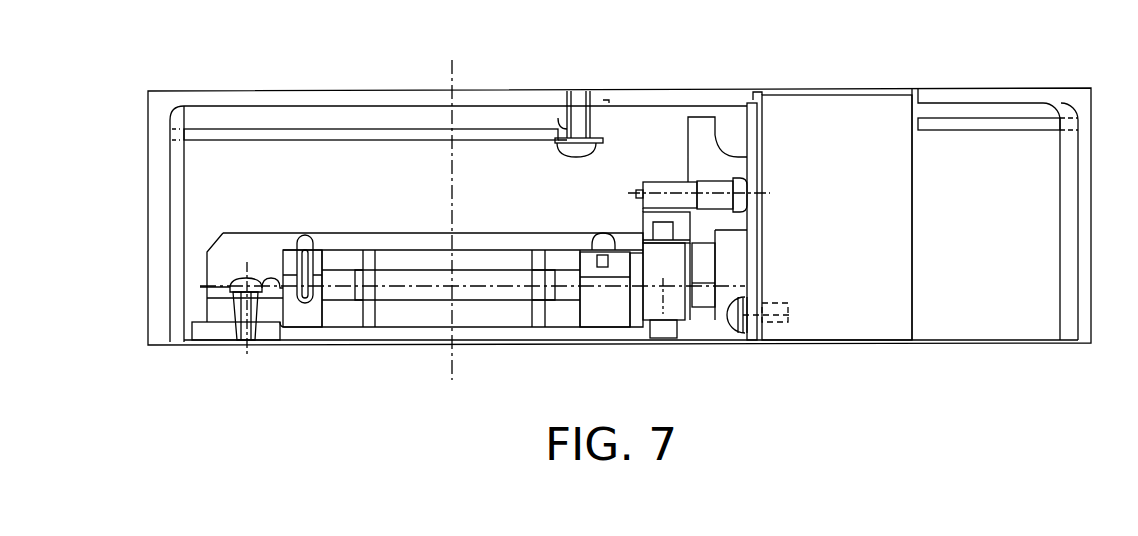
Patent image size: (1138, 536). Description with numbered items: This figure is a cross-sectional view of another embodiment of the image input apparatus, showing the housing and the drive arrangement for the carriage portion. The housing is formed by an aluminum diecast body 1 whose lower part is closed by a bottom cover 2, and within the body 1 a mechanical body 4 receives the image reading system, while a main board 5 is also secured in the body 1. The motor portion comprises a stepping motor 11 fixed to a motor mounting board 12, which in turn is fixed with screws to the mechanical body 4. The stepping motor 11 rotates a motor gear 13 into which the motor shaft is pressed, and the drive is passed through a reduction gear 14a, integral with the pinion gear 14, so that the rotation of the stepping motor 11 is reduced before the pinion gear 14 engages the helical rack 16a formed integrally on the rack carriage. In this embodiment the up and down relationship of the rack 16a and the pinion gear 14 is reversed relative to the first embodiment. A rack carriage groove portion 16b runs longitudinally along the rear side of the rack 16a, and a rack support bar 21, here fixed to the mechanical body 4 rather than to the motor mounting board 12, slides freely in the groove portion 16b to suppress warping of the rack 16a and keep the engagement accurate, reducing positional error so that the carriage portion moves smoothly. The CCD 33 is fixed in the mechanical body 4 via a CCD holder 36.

The body 1 is at (1087, 125).
The bottom cover 2 is at (993, 345).
The mechanical body 4 is at (570, 330).
The main board 5 is at (1013, 120).
The stepping motor 11 is at (858, 102).
The motor mounting board 12 is at (757, 112).
The motor gear 13 is at (712, 180).
The pinion gear 14 is at (660, 182).
The reduction gear 14a is at (705, 263).
The rack 16a is at (641, 206).
The rack carriage groove portion 16b is at (652, 225).
The rack support bar 21 is at (655, 303).
The CCD 33 is at (480, 290).
The CCD holder 36 is at (213, 262).